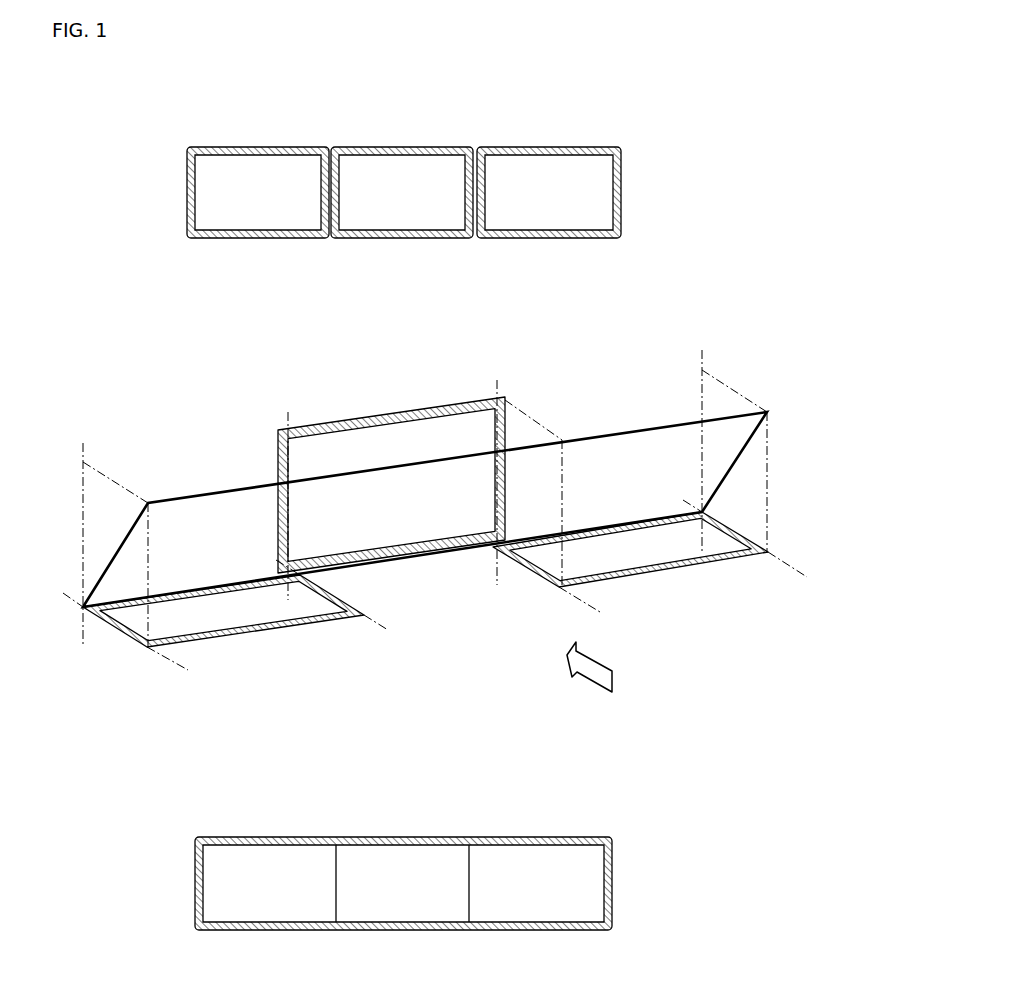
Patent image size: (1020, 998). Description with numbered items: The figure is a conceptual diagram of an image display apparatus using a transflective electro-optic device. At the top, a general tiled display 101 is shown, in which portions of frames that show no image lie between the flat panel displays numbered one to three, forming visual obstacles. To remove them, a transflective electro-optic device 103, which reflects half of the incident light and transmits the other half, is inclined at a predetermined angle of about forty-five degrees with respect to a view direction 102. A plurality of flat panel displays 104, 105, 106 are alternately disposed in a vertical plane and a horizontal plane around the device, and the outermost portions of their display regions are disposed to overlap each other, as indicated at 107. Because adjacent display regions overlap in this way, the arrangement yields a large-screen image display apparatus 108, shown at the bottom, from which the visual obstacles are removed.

The general tiled display 101 is at (404, 147).
The view direction 102 is at (618, 689).
The transflective electro-optic device 103 is at (660, 424).
The flat panel display 104 is at (256, 640).
The flat panel display 105 is at (402, 412).
The flat panel display 106 is at (678, 575).
The overlap of display regions 107 is at (588, 607).
The large-screen image display apparatus 108 is at (407, 836).